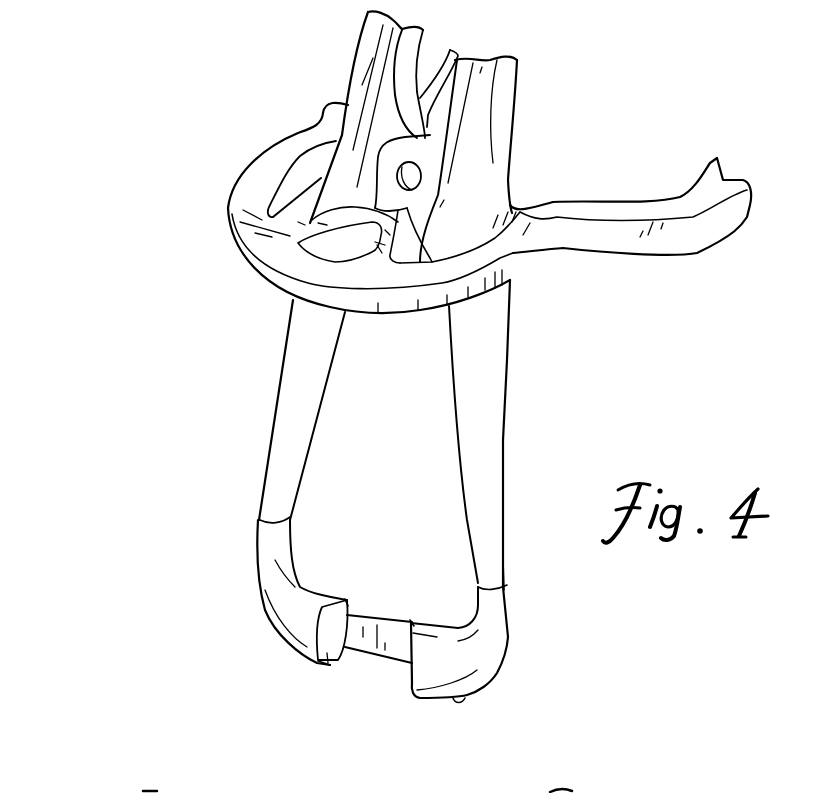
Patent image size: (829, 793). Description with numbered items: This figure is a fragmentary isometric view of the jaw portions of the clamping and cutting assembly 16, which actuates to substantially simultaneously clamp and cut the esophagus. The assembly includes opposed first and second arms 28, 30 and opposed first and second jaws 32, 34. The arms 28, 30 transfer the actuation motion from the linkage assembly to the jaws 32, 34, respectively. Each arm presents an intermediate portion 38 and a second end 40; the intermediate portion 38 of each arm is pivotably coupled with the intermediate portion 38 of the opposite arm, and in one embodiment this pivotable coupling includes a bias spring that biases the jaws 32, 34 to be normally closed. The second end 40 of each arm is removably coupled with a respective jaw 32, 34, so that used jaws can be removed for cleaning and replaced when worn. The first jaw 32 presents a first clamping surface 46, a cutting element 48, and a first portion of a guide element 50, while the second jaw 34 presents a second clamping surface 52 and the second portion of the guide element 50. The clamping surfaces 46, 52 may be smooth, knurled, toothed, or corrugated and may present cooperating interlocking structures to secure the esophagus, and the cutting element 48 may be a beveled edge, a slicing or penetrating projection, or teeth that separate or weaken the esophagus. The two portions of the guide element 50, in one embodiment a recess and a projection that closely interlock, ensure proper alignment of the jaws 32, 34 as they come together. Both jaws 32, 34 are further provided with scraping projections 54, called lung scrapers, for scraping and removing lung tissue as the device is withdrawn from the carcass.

The clamping and cutting assembly 16 is at (118, 349).
The first arm 28 is at (270, 355).
The second arm 30 is at (517, 350).
The first jaw 32 is at (283, 610).
The second jaw 34 is at (482, 665).
The intermediate portion 38 is at (447, 190).
The second end 40 is at (510, 558).
The first clamping surface 46 is at (352, 598).
The cutting element 48 is at (322, 668).
The guide element 50 is at (363, 672).
The second clamping surface 52 is at (407, 617).
The scraping projections 54 is at (460, 704).